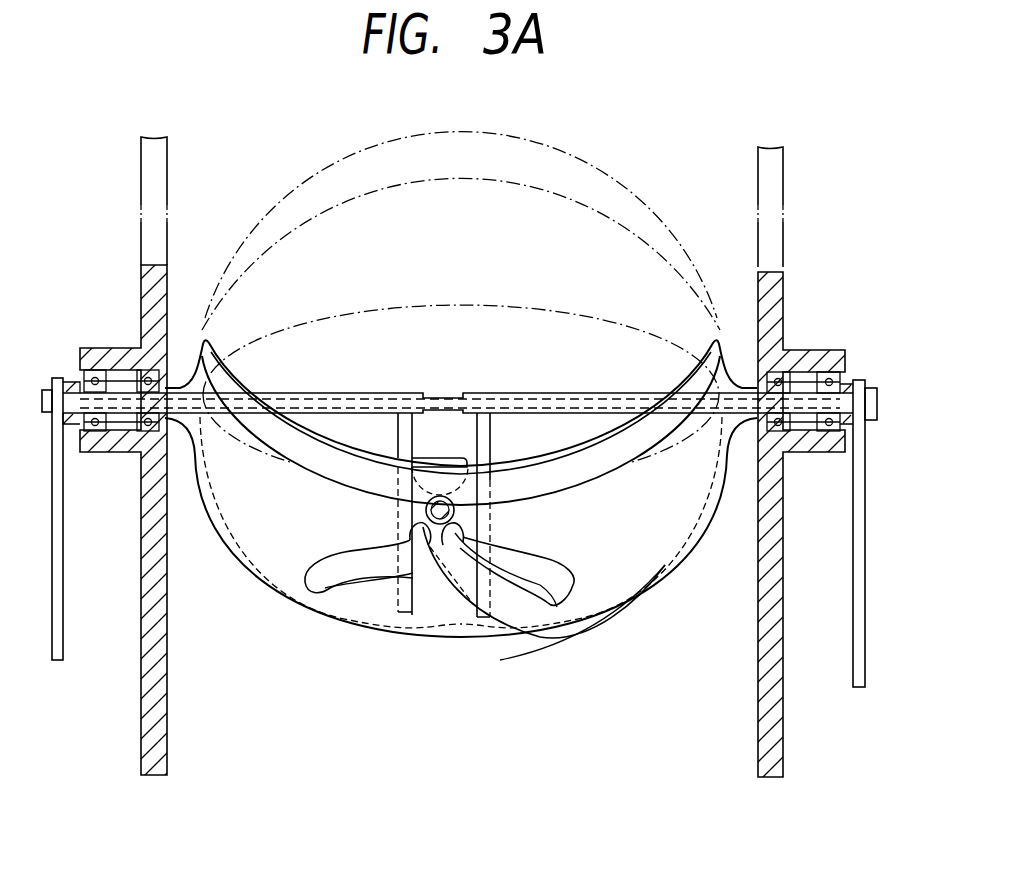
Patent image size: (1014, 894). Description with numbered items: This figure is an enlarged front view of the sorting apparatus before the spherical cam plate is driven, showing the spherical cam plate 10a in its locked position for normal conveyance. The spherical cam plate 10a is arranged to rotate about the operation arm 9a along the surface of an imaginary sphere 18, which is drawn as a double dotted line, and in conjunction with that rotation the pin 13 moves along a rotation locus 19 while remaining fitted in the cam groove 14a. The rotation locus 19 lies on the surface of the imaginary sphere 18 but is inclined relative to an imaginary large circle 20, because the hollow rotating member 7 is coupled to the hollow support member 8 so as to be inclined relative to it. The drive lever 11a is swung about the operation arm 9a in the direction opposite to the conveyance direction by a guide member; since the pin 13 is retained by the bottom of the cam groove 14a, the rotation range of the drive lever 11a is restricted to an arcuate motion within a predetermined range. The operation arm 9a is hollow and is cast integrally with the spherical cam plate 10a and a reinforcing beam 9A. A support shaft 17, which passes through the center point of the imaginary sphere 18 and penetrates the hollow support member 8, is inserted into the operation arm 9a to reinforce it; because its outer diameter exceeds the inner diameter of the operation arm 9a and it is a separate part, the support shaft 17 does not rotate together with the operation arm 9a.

The hollow rotating member 7 is at (784, 168).
The hollow support member 8 is at (778, 580).
The operation arm 9a is at (537, 392).
The reinforcing beam 9A is at (487, 445).
The spherical cam plate 10a is at (619, 595).
The drive lever 11a is at (858, 498).
The pin 13 is at (420, 542).
The cam groove 14a is at (512, 565).
The support shaft 17 is at (440, 399).
The imaginary sphere 18 is at (609, 178).
The rotation locus 19 is at (381, 186).
The imaginary large circle 20 is at (349, 312).